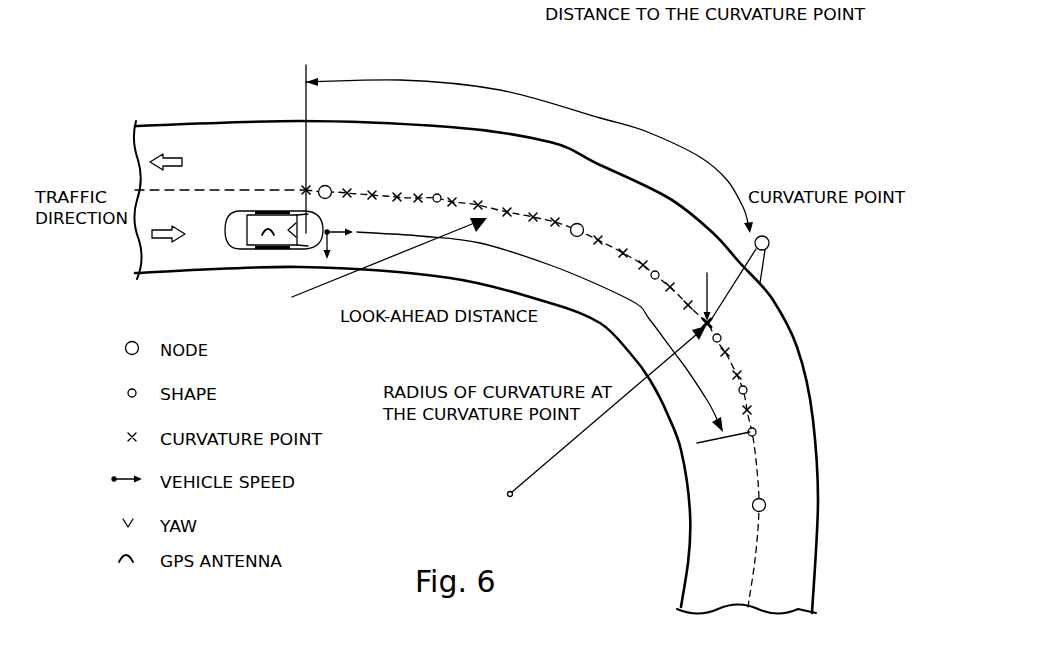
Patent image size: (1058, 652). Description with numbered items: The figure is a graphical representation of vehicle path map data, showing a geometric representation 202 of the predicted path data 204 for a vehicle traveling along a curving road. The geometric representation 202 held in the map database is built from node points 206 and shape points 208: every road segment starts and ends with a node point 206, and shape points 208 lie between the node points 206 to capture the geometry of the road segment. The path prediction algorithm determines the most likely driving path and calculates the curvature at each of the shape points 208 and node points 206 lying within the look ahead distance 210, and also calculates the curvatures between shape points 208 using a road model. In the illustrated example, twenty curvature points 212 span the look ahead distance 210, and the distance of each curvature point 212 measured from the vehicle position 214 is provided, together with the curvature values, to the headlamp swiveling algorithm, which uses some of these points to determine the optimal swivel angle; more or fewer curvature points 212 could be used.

The geometric representation 202 is at (368, 274).
The predicted path data 204 is at (780, 428).
The node point 206 is at (327, 186).
The shape point 208 is at (438, 194).
The look ahead distance 210 is at (617, 294).
The curvature point 212 is at (507, 208).
The vehicle position 214 is at (320, 229).